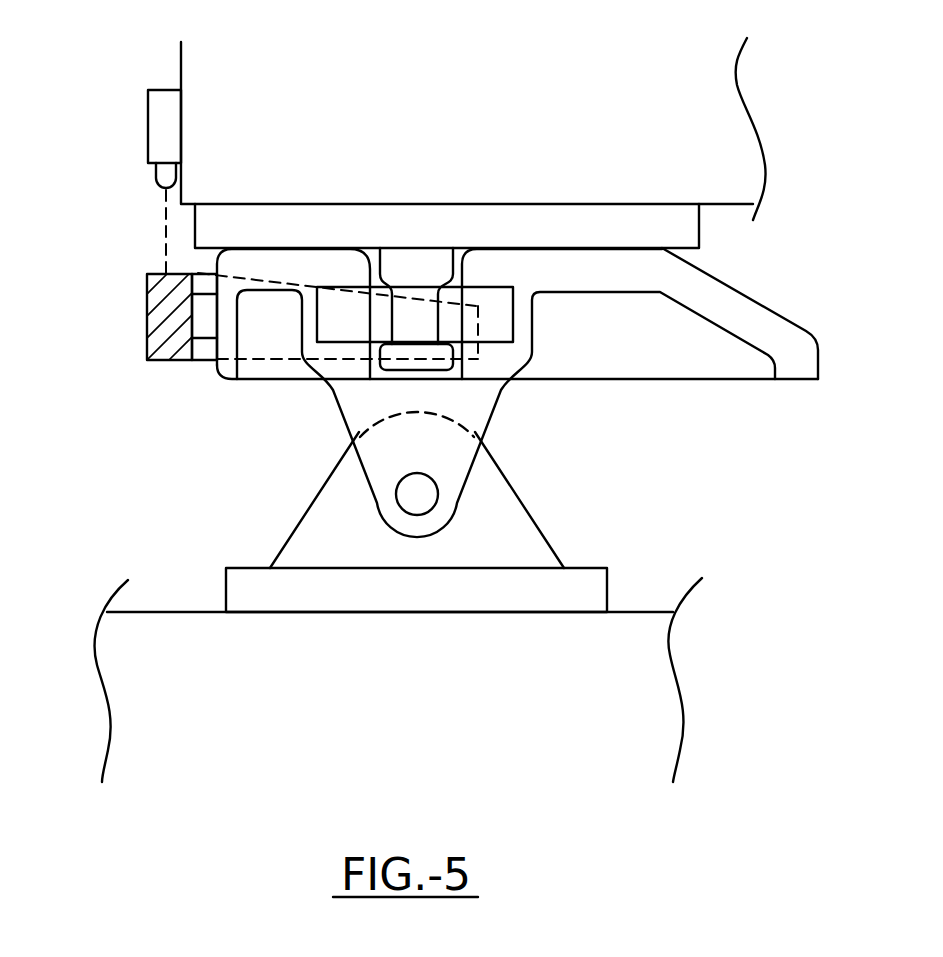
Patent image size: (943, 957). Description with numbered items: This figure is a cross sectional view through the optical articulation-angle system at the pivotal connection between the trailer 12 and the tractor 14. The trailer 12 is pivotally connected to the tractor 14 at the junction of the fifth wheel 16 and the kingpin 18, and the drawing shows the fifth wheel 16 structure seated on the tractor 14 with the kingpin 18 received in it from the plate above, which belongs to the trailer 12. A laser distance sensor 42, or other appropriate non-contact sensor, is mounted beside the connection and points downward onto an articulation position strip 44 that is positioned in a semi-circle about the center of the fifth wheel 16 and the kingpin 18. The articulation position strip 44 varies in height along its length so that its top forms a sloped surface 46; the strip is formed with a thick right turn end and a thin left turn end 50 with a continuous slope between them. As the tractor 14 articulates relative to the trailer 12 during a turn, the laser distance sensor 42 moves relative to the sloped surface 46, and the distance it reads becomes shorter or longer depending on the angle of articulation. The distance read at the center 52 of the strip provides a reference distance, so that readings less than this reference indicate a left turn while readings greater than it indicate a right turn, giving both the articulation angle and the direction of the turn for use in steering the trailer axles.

The trailer 12 is at (672, 140).
The tractor 14 is at (630, 693).
The fifth wheel 16 is at (715, 305).
The kingpin 18 is at (415, 263).
The laser distance sensor 42 is at (148, 150).
The articulation position strip 44 is at (147, 327).
The sloped surface 46 is at (158, 273).
The thin left turn end 50 is at (475, 305).
The center 52 is at (181, 275).